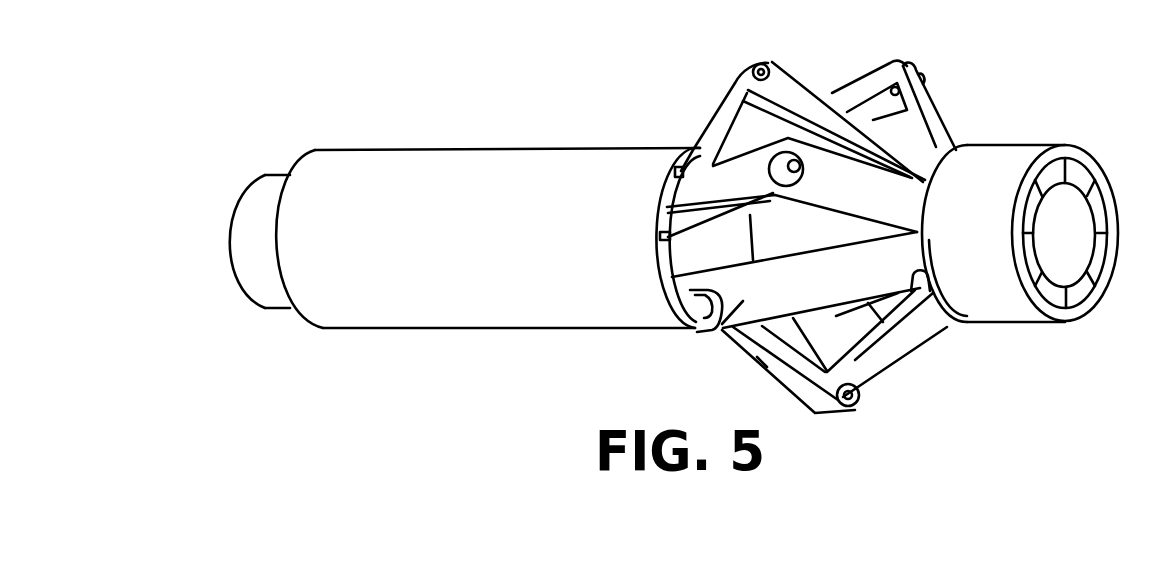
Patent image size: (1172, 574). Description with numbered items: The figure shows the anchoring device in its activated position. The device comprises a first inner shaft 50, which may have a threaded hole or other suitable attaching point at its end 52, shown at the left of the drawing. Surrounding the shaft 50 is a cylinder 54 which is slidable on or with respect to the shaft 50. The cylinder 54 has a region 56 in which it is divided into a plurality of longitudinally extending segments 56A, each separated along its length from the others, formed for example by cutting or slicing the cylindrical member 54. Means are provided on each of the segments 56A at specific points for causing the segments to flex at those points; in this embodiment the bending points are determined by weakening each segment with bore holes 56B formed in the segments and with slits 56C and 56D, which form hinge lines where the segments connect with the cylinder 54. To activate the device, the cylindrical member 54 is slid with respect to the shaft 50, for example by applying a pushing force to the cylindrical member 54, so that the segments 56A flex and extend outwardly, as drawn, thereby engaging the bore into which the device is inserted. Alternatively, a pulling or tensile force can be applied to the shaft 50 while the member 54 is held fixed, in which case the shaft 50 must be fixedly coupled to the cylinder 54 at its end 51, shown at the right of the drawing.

The first inner shaft 50 is at (266, 274).
The end 51 is at (1050, 173).
The end 52 is at (233, 225).
The cylinder 54 is at (422, 172).
The region 56 is at (797, 212).
The longitudinally extending segments 56A is at (793, 93).
The bore holes 56B is at (752, 72).
The slits 56C is at (668, 198).
The slits 56D is at (938, 330).